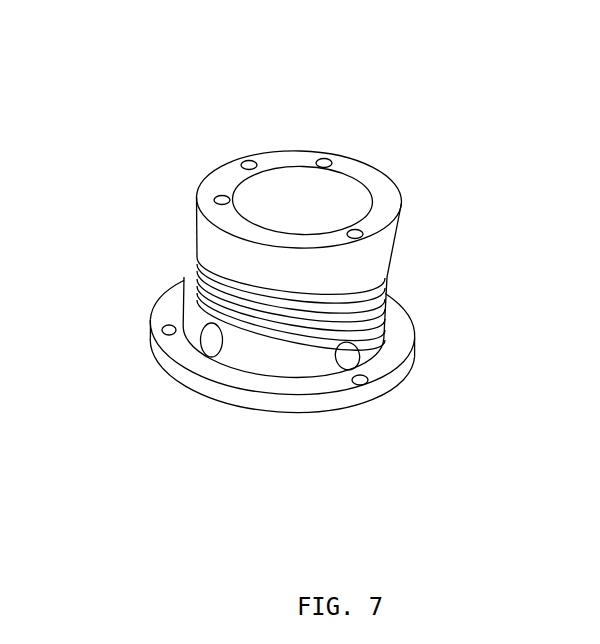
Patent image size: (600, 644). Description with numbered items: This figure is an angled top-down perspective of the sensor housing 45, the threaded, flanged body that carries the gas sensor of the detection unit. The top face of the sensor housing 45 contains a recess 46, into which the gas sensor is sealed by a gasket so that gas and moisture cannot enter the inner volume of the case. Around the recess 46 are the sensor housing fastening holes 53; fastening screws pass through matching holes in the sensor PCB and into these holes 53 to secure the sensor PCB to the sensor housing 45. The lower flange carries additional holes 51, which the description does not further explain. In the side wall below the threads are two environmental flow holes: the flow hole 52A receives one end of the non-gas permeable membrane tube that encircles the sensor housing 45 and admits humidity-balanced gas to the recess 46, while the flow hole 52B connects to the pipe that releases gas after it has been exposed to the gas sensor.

The sensor housing 45 is at (398, 195).
The recess 46 is at (315, 217).
The sensor housing fastening holes 53 is at (352, 229).
The flange holes 51 is at (162, 330).
The gas sensor housing environmental flow hole 52A is at (213, 357).
The sensor housing environmental flow hole 52B is at (343, 370).